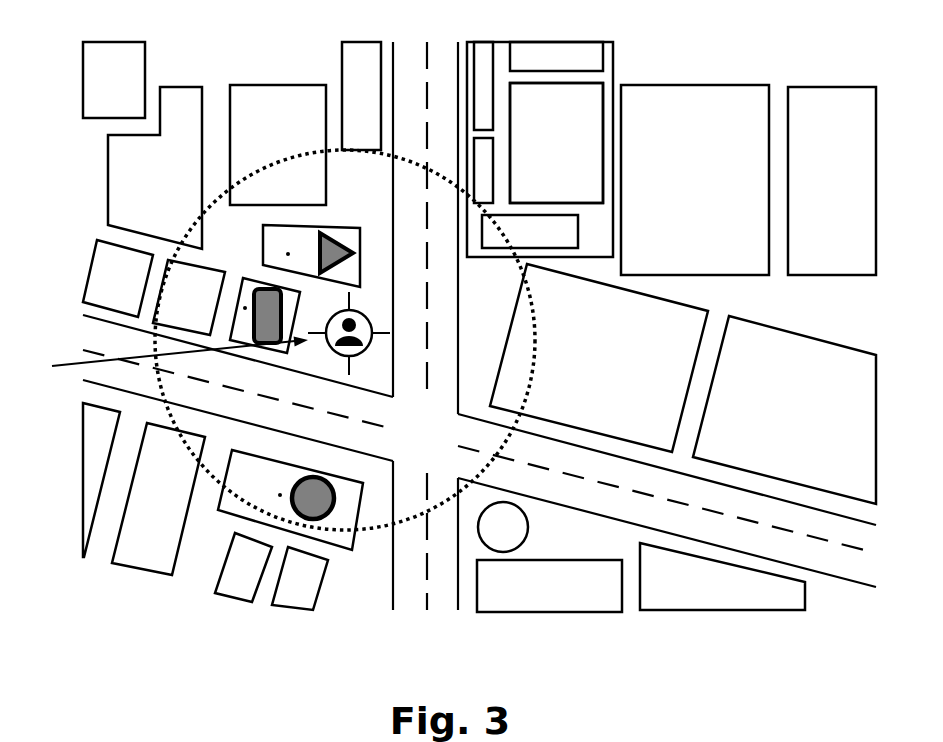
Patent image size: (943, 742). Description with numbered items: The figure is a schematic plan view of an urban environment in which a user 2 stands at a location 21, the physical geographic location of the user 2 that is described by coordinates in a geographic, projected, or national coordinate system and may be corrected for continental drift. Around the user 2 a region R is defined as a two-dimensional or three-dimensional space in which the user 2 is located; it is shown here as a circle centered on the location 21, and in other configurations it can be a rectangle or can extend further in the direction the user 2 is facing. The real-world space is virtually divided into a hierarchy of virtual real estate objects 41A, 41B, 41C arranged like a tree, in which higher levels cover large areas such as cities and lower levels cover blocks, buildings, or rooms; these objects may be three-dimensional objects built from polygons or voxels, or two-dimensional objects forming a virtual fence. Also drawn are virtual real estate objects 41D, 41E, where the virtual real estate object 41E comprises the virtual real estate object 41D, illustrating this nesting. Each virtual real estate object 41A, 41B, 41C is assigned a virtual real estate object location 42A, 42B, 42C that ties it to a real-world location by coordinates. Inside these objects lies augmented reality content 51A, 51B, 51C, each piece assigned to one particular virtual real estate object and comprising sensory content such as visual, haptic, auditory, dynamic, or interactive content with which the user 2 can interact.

The user 2 is at (347, 349).
The location 21 is at (161, 358).
The virtual real estate object 41A is at (302, 232).
The virtual real estate object location 42A is at (288, 254).
The augmented reality content 51A is at (332, 247).
The virtual real estate object 41B is at (247, 290).
The virtual real estate object location 42B is at (245, 308).
The augmented reality content 51B is at (267, 315).
The virtual real estate object 41C is at (253, 493).
The virtual real estate object location 42C is at (280, 495).
The augmented reality content 51C is at (312, 503).
The virtual real estate object 41D is at (583, 92).
The virtual real estate object 41E is at (615, 75).
The region R is at (370, 544).